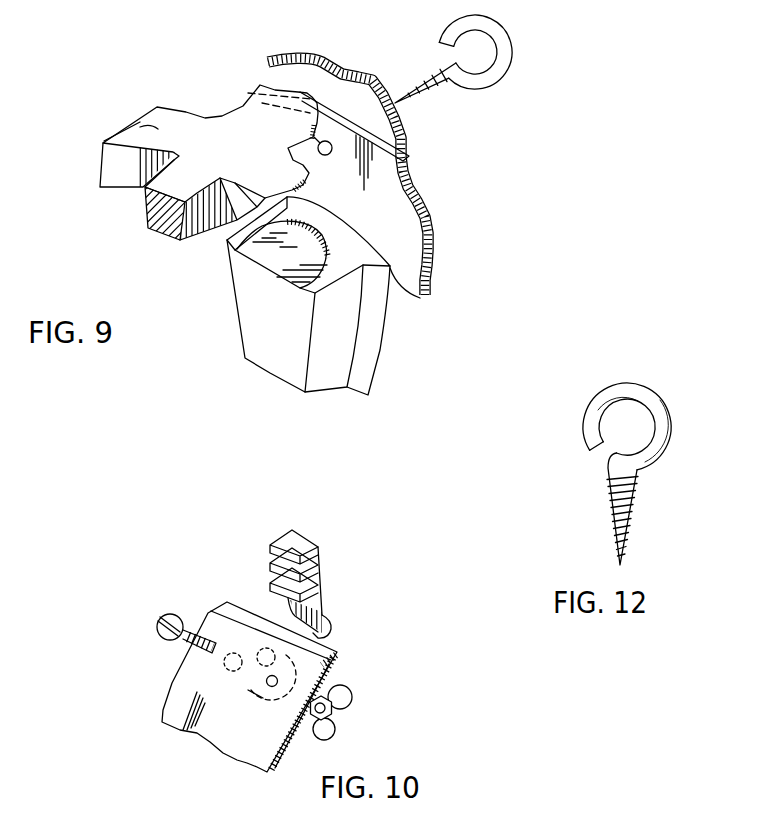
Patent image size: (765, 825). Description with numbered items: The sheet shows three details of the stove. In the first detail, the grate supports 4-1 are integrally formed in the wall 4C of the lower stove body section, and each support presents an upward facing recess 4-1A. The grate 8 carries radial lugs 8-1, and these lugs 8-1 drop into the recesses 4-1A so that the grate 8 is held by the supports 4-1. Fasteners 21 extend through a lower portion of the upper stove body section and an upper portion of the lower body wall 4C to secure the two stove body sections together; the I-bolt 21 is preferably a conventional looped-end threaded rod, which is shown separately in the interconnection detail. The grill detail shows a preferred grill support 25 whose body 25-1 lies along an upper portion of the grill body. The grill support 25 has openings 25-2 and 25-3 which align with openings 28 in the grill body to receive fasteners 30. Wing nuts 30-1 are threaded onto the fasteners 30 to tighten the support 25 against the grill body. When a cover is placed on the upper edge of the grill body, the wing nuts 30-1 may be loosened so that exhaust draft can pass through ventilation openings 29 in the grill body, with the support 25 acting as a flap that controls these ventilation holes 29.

In FIG. 9, the grate 8 is at (103, 143).
In FIG. 9, the radial lugs 8-1 is at (272, 116).
In FIG. 9, the fasteners (I-bolt) 21 is at (502, 50).
In FIG. 12, the fasteners (I-bolt) 21 is at (655, 400).
In FIG. 9, the wall of the lower stove body section 4C is at (421, 233).
In FIG. 9, the grate supports 4-1 is at (336, 267).
In FIG. 9, the upward facing recesses 4-1A is at (272, 244).
In FIG. 10, the grill support 25 is at (302, 548).
In FIG. 10, the body of the grill support 25-1 is at (333, 626).
In FIG. 10, the opening of the grill support 25-2 is at (277, 680).
In FIG. 10, the opening of the grill support 25-3 is at (233, 657).
In FIG. 10, the openings in the grill body 28 is at (236, 671).
In FIG. 10, the ventilation openings 29 is at (266, 654).
In FIG. 10, the fasteners 30 is at (160, 638).
In FIG. 10, the wing nuts 30-1 is at (351, 706).